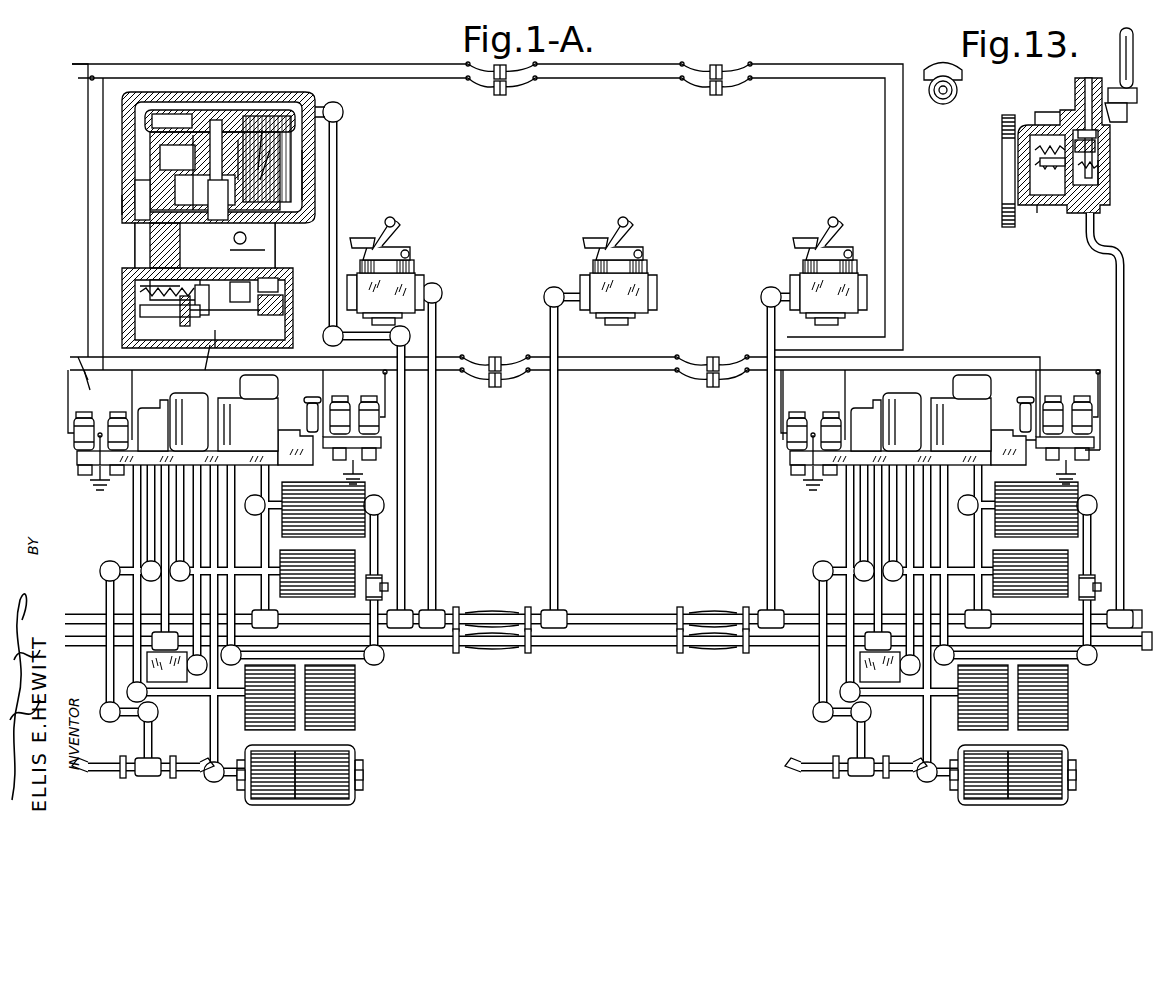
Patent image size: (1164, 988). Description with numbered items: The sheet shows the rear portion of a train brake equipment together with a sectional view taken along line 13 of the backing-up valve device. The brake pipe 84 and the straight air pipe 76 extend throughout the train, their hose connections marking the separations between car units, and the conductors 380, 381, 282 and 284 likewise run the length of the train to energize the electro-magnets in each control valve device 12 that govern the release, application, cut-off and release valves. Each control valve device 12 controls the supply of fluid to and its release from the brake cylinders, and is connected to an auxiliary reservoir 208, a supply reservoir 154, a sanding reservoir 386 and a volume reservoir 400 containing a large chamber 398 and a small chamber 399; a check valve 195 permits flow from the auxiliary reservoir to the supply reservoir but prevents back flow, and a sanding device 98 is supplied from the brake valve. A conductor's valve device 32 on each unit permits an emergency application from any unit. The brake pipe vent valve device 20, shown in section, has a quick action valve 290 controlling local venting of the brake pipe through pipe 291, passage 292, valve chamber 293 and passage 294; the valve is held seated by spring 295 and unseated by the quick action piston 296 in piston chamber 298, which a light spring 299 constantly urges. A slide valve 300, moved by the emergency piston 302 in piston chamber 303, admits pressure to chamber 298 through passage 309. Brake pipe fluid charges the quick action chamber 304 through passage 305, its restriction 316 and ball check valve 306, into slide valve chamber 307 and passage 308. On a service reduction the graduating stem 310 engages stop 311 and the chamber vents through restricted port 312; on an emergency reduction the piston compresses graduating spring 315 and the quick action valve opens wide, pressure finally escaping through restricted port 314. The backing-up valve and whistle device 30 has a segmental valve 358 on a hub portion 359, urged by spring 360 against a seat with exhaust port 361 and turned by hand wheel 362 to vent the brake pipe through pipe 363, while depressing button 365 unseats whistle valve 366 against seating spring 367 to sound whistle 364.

In FIG. 1-A, the control valve device 12 is at (70, 465).
In FIG. 13, the section line 13— 13 is at (1056, 116).
In FIG. 1-A, the brake pipe vent valve device 20 is at (327, 154).
In FIG. 13, the backing-up valve and whistle device 30 is at (1014, 222).
In FIG. 1-A, the conductor's valve device 32 is at (414, 258).
In FIG. 1-A, the straight air pipe 76 is at (80, 646).
In FIG. 1-A, the brake pipe 84 is at (75, 613).
In FIG. 1-A, the sanding device 98 is at (172, 680).
In FIG. 1-A, the supply reservoir 154 is at (358, 714).
In FIG. 1-A, the check valve 195 is at (388, 587).
In FIG. 1-A, the auxiliary reservoir 208 is at (368, 492).
In FIG. 1-A, the conductor 282 is at (101, 385).
In FIG. 1-A, the conductor 284 is at (98, 370).
In FIG. 1-A, the quick action valve 290 is at (138, 292).
In FIG. 1-A, the pipe 291 is at (340, 214).
In FIG. 1-A, the passage 292 is at (122, 118).
In FIG. 1-A, the valve chamber 293 is at (150, 280).
In FIG. 1-A, the passage 294 is at (204, 367).
In FIG. 1-A, the spring 295 is at (138, 311).
In FIG. 1-A, the quick action piston 296 is at (278, 288).
In FIG. 1-A, the piston chamber 298 is at (283, 303).
In FIG. 1-A, the light spring 299 is at (285, 333).
In FIG. 1-A, the slide valve 300 is at (122, 205).
In FIG. 1-A, the emergency piston 302 is at (266, 143).
In FIG. 1-A, the piston chamber 303 is at (165, 150).
In FIG. 1-A, the quick action chamber 304 is at (345, 117).
In FIG. 1-A, the passage 305 is at (247, 238).
In FIG. 1-A, the ball check valve 306 is at (229, 202).
In FIG. 1-A, the chamber 307 is at (272, 157).
In FIG. 1-A, the passage 308 is at (300, 185).
In FIG. 1-A, the passage 309 is at (150, 240).
In FIG. 1-A, the graduating stem 310 is at (218, 170).
In FIG. 1-A, the stop 311 is at (172, 108).
In FIG. 1-A, the restricted port 312 is at (135, 188).
In FIG. 1-A, the restricted port 314 is at (250, 288).
In FIG. 1-A, the graduating spring 315 is at (240, 140).
In FIG. 1-A, the restriction 316 is at (265, 250).
In FIG. 13, the segmental valve 358 is at (943, 60).
In FIG. 13, the hub portion 359 is at (937, 100).
In FIG. 13, the spring 360 is at (1040, 164).
In FIG. 13, the exhaust port 361 is at (1040, 130).
In FIG. 13, the hand wheel 362 is at (1002, 118).
In FIG. 13, the pipe 363 is at (1114, 290).
In FIG. 13, the whistle 364 is at (1120, 45).
In FIG. 13, the button 365 is at (1082, 80).
In FIG. 13, the whistle valve 366 is at (1100, 135).
In FIG. 13, the seating spring 367 is at (1100, 170).
In FIG. 1-A, the conductor 380 is at (78, 64).
In FIG. 1-A, the conductor 381 is at (88, 78).
In FIG. 1-A, the sanding reservoir 386 is at (357, 560).
In FIG. 1-A, the large chamber 398 is at (300, 780).
In FIG. 1-A, the small chamber 399 is at (258, 778).
In FIG. 1-A, the volume reservoir 400 is at (360, 795).